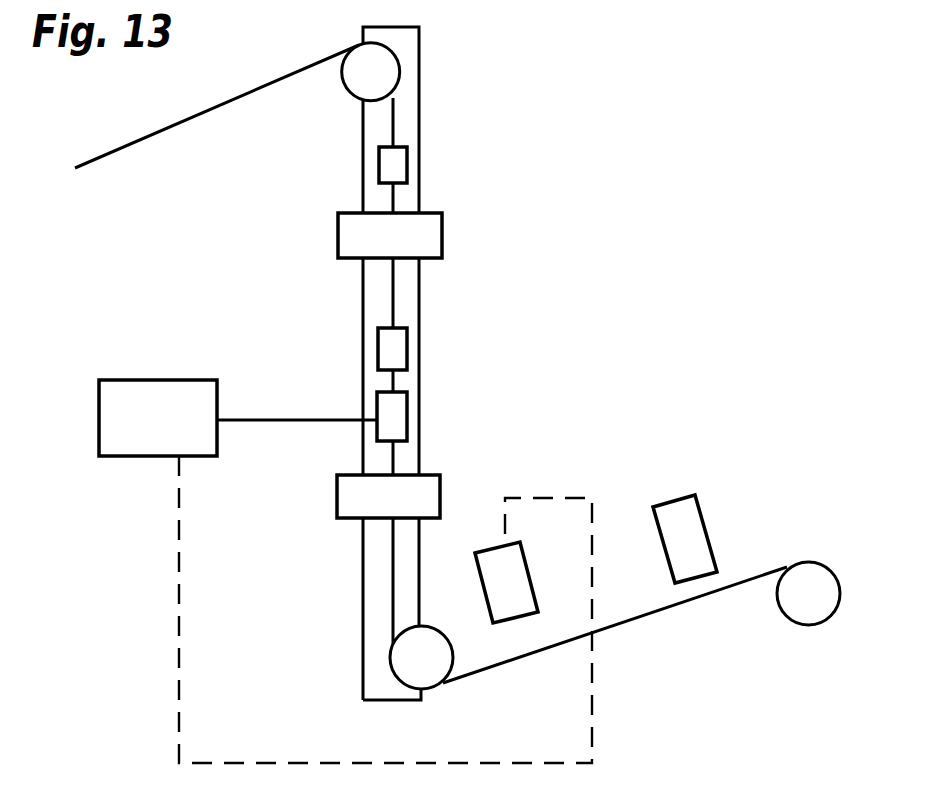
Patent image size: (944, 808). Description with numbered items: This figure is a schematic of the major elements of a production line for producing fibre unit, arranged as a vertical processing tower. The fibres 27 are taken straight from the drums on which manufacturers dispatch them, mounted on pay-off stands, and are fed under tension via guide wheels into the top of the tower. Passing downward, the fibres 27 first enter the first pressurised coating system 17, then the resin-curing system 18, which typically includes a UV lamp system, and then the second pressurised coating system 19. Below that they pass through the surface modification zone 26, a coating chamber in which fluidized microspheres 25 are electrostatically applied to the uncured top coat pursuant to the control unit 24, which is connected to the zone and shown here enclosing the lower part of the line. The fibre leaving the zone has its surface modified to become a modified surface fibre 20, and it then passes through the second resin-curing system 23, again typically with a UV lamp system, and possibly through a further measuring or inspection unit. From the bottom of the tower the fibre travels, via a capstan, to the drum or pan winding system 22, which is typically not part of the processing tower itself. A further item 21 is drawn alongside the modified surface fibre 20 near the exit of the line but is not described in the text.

The first pressurised coating system 17 is at (407, 163).
The resin-curing system 18 is at (442, 222).
The second pressurised coating system 19 is at (407, 357).
The modified surface fibre 20 is at (520, 567).
The receiving tray 21 is at (707, 523).
The drum or pan winding system 22 is at (778, 602).
The resin-curing system 23 is at (338, 503).
The control unit 24 is at (148, 457).
The fluidized microspheres 25 is at (242, 418).
The surface modification zone 26 is at (377, 396).
The fibres 27 is at (230, 103).